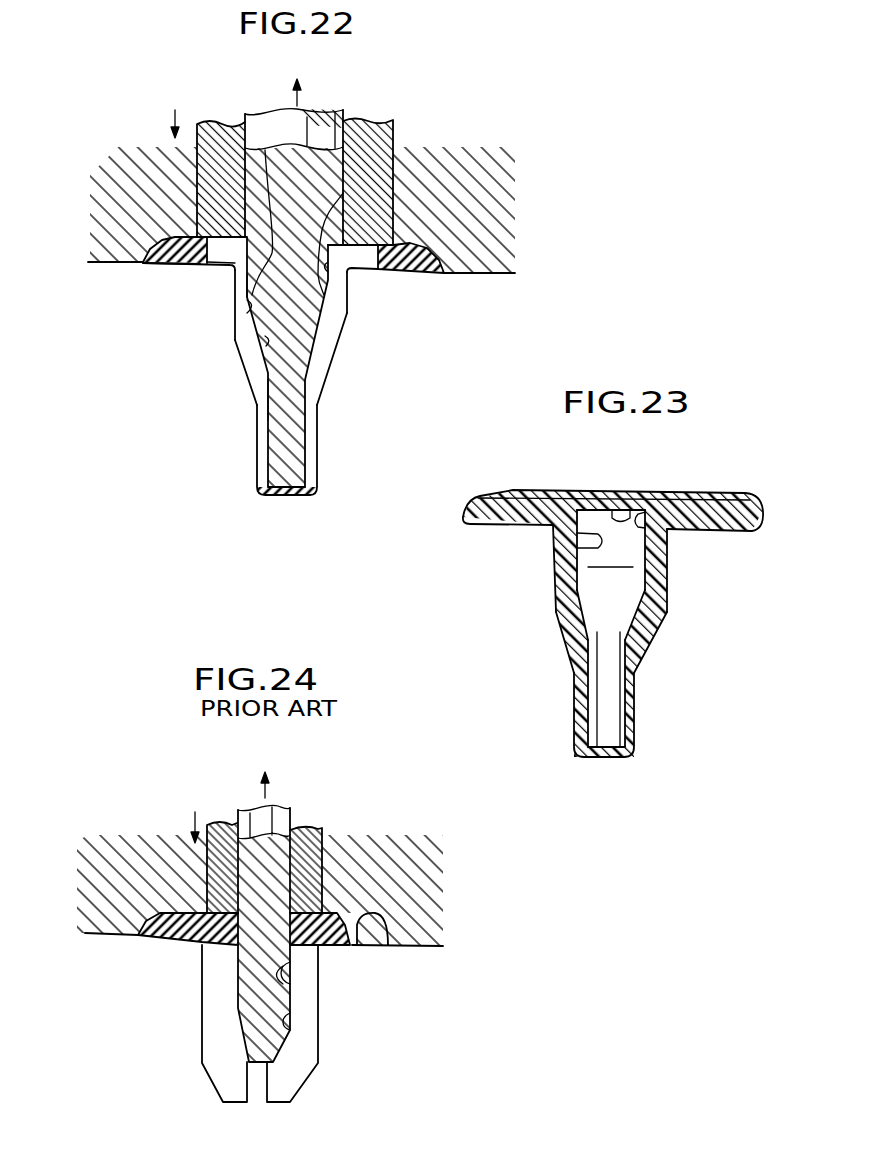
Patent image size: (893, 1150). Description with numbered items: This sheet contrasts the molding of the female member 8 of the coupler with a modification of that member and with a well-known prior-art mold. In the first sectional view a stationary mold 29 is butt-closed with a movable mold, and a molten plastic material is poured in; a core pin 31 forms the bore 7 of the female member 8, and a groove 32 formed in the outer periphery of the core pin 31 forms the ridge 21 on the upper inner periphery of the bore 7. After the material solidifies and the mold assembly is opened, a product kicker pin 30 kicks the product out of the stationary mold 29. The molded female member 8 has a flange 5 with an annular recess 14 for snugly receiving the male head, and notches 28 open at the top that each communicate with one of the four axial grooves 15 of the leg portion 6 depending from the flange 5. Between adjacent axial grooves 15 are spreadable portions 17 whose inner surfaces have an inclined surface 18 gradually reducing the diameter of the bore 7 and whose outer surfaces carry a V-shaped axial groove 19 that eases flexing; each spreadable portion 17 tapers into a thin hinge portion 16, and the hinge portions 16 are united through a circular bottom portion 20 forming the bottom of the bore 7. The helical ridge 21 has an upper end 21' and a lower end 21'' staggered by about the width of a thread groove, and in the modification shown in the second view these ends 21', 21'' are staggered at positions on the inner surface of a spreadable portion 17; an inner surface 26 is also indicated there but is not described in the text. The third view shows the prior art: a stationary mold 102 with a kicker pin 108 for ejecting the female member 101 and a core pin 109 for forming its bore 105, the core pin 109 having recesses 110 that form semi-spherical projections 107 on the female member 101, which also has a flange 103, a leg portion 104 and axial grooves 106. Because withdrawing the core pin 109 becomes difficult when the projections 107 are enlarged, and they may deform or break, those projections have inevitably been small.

In FIG. 22, the stationary mold 29 is at (487, 228).
In FIG. 22, the product kicker pin 30 is at (221, 130).
In FIG. 22, the core pin 31 is at (320, 132).
In FIG. 22, the groove 32 is at (265, 150).
In FIG. 22, the flange 5 is at (432, 266).
In FIG. 23, the flange 5 is at (493, 518).
In FIG. 22, the annular recess 14 is at (167, 265).
In FIG. 23, the annular recess 14 is at (697, 497).
In FIG. 22, the notches 28 is at (221, 257).
In FIG. 22, the female member 8 is at (300, 387).
In FIG. 23, the female member 8 is at (587, 628).
In FIG. 22, the leg portion 6 is at (312, 400).
In FIG. 23, the leg portion 6 is at (585, 656).
In FIG. 22, the axial grooves 15 is at (241, 347).
In FIG. 23, the axial grooves 15 is at (593, 641).
In FIG. 22, the spreadable portions 17 is at (330, 354).
In FIG. 23, the spreadable portions 17 is at (600, 590).
In FIG. 22, the hinge portions 16 is at (313, 438).
In FIG. 23, the hinge portions 16 is at (603, 715).
In FIG. 22, the inclined surface 18 is at (262, 368).
In FIG. 23, the inclined surface 18 is at (588, 607).
In FIG. 22, the bore 7 is at (247, 327).
In FIG. 22, the ridge 21 is at (292, 304).
In FIG. 23, the ridge 21 is at (611, 514).
In FIG. 23, the upper end of the ridge 21' is at (622, 488).
In FIG. 23, the lower end of the ridge 21'' is at (582, 501).
In FIG. 23, the axial groove 19 is at (657, 612).
In FIG. 23, the inner bore surface 26 is at (608, 693).
In FIG. 22, the bottom portion 20 is at (287, 497).
In FIG. 23, the bottom portion 20 is at (603, 758).
In FIG. 24, the stationary mold 102 is at (417, 907).
In FIG. 24, the kicker pin 108 is at (220, 822).
In FIG. 24, the core pin 109 is at (255, 838).
In FIG. 24, the female member 101 is at (237, 1007).
In FIG. 24, the flange 103 is at (168, 931).
In FIG. 24, the leg portion 104 is at (262, 1023).
In FIG. 24, the axial grooves 106 is at (213, 1044).
In FIG. 24, the semi-spherical projections 107 is at (303, 977).
In FIG. 24, the recesses 110 is at (270, 969).
In FIG. 24, the bore 105 is at (288, 1023).